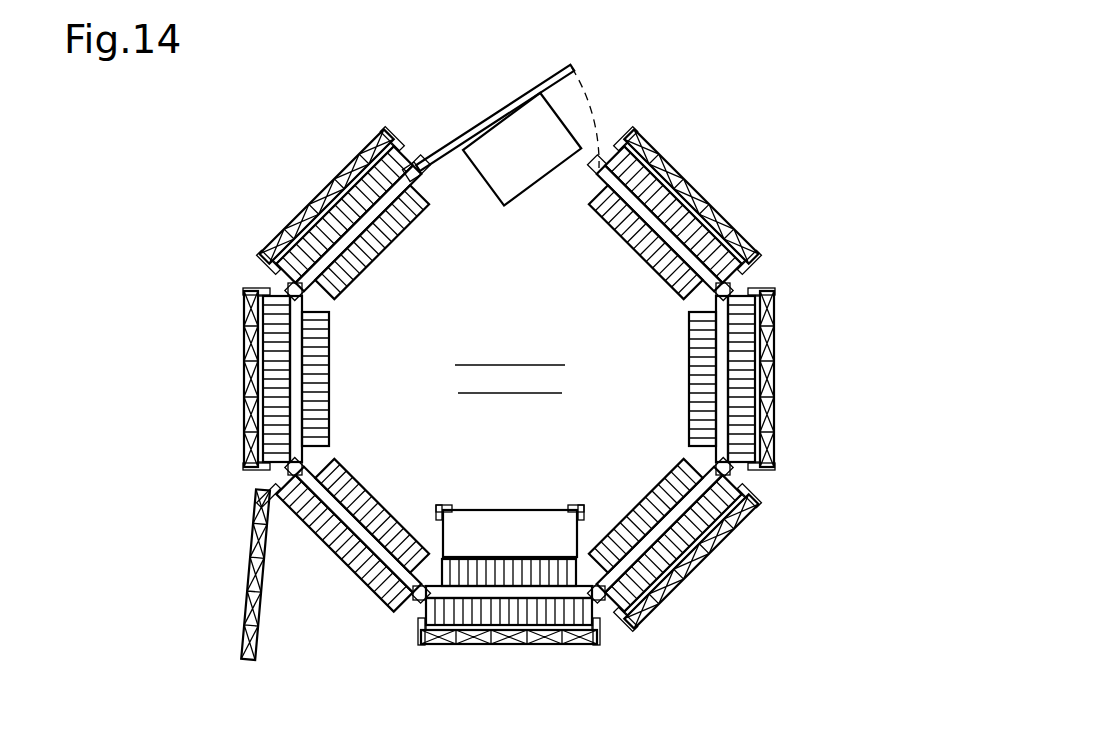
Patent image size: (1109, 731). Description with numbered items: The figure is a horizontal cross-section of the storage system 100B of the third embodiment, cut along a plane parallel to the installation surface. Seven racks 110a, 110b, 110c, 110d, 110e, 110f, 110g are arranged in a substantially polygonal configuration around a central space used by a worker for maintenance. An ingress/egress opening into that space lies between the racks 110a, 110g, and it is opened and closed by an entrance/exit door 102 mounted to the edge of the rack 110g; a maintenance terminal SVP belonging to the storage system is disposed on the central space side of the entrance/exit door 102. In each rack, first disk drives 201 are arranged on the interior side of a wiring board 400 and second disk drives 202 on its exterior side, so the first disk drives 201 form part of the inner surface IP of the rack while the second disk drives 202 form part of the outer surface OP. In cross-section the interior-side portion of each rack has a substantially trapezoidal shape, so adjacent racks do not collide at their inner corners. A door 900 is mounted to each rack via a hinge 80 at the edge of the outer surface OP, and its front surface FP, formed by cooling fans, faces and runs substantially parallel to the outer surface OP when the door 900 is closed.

The storage system 100B is at (378, 43).
The entrance/exit door 102 is at (532, 85).
The maintenance terminal SVP is at (520, 132).
The rack 110a is at (615, 234).
The rack 110b is at (690, 377).
The rack 110c is at (645, 493).
The rack 110d is at (515, 553).
The rack 110e is at (378, 492).
The rack 110f is at (332, 355).
The rack 110g is at (405, 238).
The first disk drives 201 is at (403, 250).
The second disk drives 202 is at (303, 205).
The wiring board 400 is at (347, 160).
The door 900 is at (262, 240).
The hinge 80 is at (397, 128).
The inner surface IP is at (425, 212).
The outer surface OP is at (328, 183).
The front surface FP is at (375, 142).